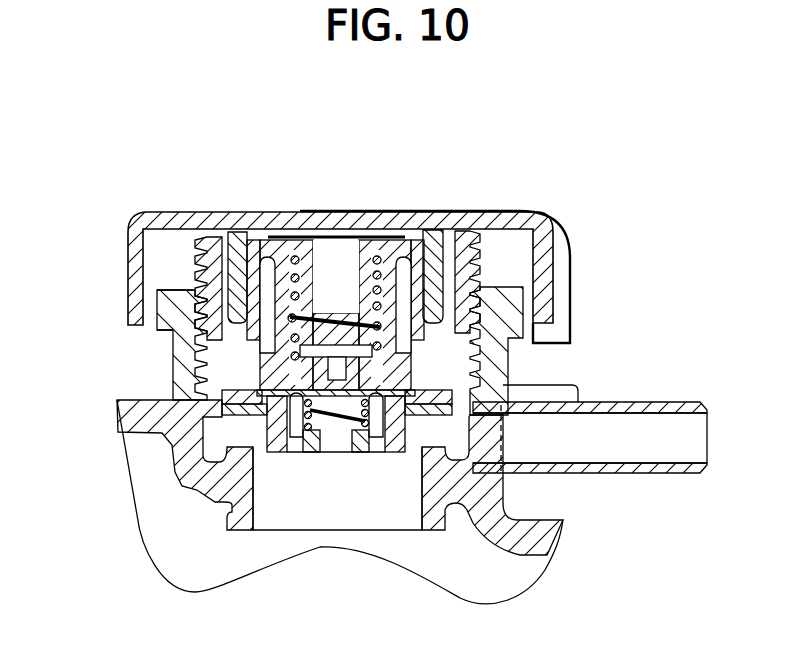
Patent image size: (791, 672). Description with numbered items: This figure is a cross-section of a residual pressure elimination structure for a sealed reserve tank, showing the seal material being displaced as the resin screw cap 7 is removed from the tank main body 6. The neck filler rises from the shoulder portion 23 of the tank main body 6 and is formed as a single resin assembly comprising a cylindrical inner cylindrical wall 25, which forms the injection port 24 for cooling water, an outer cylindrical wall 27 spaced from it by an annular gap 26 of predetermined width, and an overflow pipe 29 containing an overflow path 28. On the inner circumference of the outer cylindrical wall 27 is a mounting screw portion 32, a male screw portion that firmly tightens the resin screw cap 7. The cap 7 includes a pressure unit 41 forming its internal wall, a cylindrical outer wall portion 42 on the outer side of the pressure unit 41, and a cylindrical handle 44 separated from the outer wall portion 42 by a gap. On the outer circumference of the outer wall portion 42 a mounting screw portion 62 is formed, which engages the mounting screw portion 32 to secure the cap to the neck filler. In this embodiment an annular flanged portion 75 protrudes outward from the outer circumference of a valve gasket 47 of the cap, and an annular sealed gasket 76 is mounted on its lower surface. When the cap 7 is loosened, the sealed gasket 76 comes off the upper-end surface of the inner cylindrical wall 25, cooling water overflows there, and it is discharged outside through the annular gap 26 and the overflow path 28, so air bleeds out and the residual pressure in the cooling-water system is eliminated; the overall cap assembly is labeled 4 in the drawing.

The cap 4 is at (145, 128).
The tank main body 6 is at (298, 500).
The resin screw cap 7 is at (373, 212).
The shoulder portion 23 is at (128, 430).
The injection port 24 is at (340, 508).
The inner cylindrical wall 25 is at (240, 492).
The annular gap 26 is at (505, 407).
The outer cylindrical wall 27 is at (183, 356).
The overflow path 28 is at (642, 447).
The overflow pipe 29 is at (655, 402).
The mounting screw portion 32 is at (203, 307).
The pressure unit 41 is at (257, 222).
The outer wall portion 42 is at (458, 222).
The cylindrical handle 44 is at (571, 262).
The valve gasket 47 is at (536, 331).
The mounting screw portion 62 is at (482, 245).
The annular flanged portion 75 is at (222, 401).
The sealed gasket 76 is at (222, 412).